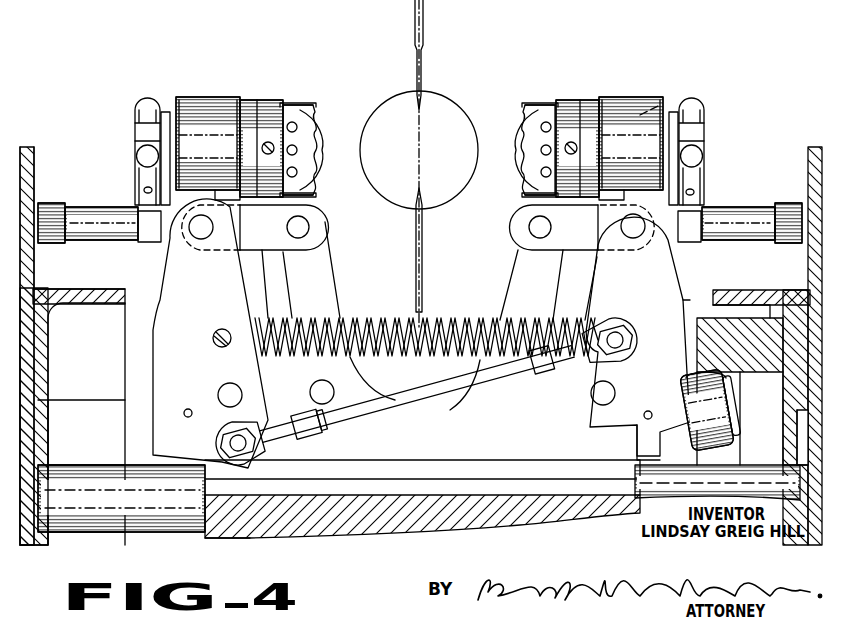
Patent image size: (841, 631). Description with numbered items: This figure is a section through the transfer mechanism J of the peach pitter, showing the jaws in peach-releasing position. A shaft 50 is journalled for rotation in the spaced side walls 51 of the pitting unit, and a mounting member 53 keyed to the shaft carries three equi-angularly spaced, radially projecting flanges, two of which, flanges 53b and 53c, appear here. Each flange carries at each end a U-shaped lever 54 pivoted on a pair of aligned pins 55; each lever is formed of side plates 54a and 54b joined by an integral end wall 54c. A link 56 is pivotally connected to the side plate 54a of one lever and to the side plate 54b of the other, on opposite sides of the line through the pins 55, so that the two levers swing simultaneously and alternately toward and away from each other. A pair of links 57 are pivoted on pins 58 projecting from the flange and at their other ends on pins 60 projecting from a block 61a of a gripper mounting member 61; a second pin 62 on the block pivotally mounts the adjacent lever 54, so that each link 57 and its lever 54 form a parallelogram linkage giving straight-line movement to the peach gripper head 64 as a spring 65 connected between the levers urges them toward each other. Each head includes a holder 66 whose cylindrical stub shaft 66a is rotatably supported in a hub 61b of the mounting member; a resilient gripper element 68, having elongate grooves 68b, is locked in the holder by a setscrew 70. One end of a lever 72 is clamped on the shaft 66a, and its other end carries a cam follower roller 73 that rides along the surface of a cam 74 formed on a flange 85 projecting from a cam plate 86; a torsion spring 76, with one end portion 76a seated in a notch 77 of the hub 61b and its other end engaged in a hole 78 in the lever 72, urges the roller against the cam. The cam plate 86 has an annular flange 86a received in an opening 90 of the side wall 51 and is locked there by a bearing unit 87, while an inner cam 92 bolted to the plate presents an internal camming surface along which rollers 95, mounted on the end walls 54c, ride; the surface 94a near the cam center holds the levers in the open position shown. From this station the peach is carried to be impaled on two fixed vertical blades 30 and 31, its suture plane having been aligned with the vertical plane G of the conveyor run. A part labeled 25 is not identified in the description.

The vertical blade 31 is at (421, 14).
The vertical plane G is at (434, 250).
The vertical blade 30 is at (414, 236).
The transfer mechanism J is at (688, 71).
The side wall 51 is at (30, 150).
The lever 72 is at (143, 108).
The torsion spring 76 is at (163, 175).
The hole 78 is at (146, 188).
The end portion of torsion spring 76a is at (716, 192).
The hub 61b is at (226, 96).
The cylindrical stub shaft 66a is at (188, 130).
The holder 66 is at (270, 104).
The setscrew 70 is at (262, 150).
The gripper element 68 is at (314, 112).
The elongate grooves 68b is at (310, 150).
The peach gripper head 64 is at (322, 190).
The jaw gripping surface 25 is at (309, 112).
The cam follower roller 73 is at (48, 206).
The gripper mounting member 61 is at (336, 218).
The block 61a is at (277, 248).
The pin 60 is at (306, 226).
The notch 77 is at (422, 260).
The link 57 is at (320, 293).
The second pin 62 is at (200, 240).
The U-shaped lever 54 is at (170, 326).
The side plate 54a is at (170, 351).
The side plate 54b is at (655, 285).
The end wall 54c is at (640, 444).
The pin 55 is at (219, 393).
The pin 58 is at (320, 386).
The spring 65 is at (400, 318).
The link 56 is at (396, 405).
The mounting member 53 is at (226, 538).
The flange 53b is at (497, 447).
The flange 53c is at (365, 520).
The shaft 50 is at (99, 478).
The flange 85 is at (122, 296).
The cam 74 is at (67, 296).
The inner cam 92 is at (715, 335).
The cam plate 86 is at (40, 355).
The opening 90 is at (805, 392).
The annular flange 86a is at (805, 418).
The bearing unit 87 is at (805, 440).
The roller 95 is at (702, 404).
The camming surface 94a is at (688, 381).